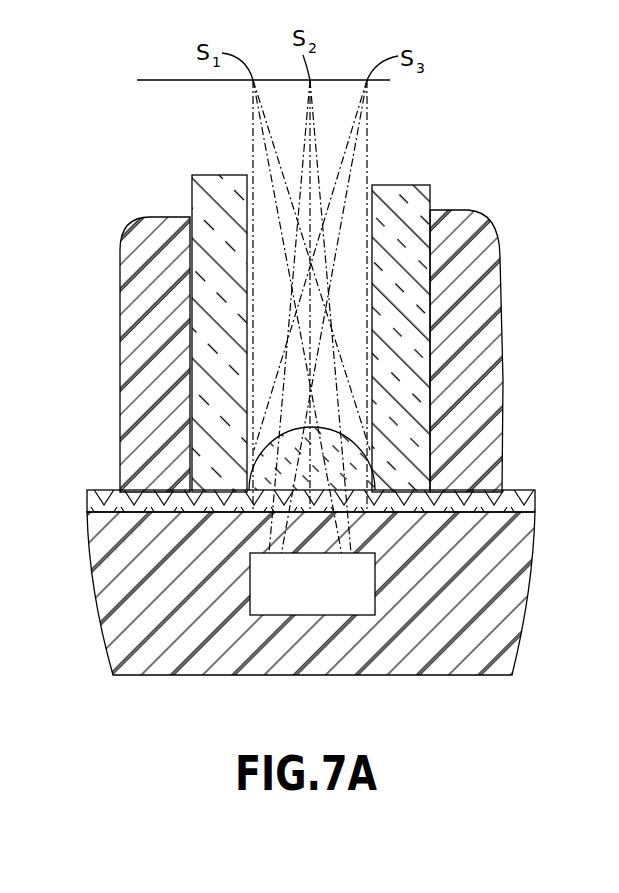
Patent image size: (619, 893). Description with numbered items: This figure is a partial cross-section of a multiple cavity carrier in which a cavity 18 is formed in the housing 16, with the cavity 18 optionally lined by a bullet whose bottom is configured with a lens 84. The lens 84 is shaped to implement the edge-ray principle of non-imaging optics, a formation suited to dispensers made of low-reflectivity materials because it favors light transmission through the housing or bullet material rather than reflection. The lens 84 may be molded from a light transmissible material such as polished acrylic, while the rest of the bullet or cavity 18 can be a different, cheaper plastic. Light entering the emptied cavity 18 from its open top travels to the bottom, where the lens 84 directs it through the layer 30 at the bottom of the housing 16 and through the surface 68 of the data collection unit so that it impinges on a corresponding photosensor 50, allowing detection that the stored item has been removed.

The housing 16 is at (487, 277).
The cavity 18 is at (192, 250).
The lens 84 is at (213, 366).
The layer 30 is at (95, 505).
The surface 68 is at (95, 558).
The photosensor 50 is at (290, 600).